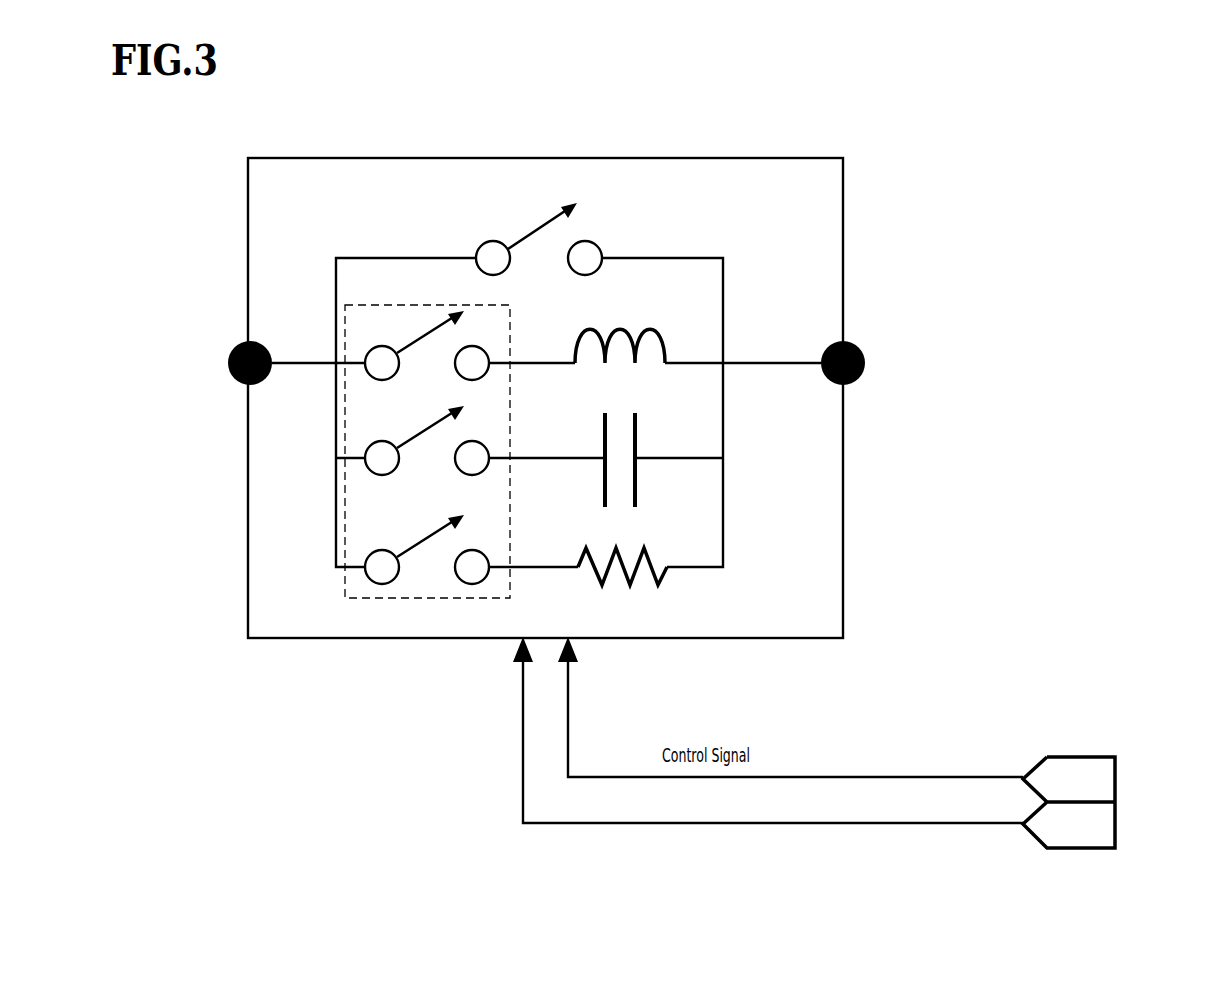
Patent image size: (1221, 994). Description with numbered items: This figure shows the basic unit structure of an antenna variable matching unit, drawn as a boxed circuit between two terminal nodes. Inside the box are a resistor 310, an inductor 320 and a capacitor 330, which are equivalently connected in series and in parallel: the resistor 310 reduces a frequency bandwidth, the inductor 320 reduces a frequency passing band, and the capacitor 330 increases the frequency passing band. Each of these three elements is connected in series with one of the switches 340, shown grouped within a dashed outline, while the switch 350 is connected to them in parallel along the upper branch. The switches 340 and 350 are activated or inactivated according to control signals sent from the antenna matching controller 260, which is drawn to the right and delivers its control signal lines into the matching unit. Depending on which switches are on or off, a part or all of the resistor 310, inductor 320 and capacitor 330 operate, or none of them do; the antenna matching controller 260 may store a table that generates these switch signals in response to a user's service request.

The antenna matching controller 260 is at (1076, 780).
The resistor 310 is at (660, 330).
The inductor 320 is at (637, 432).
The capacitor 330 is at (665, 575).
The switches 340 is at (405, 304).
The switch 350 is at (590, 242).